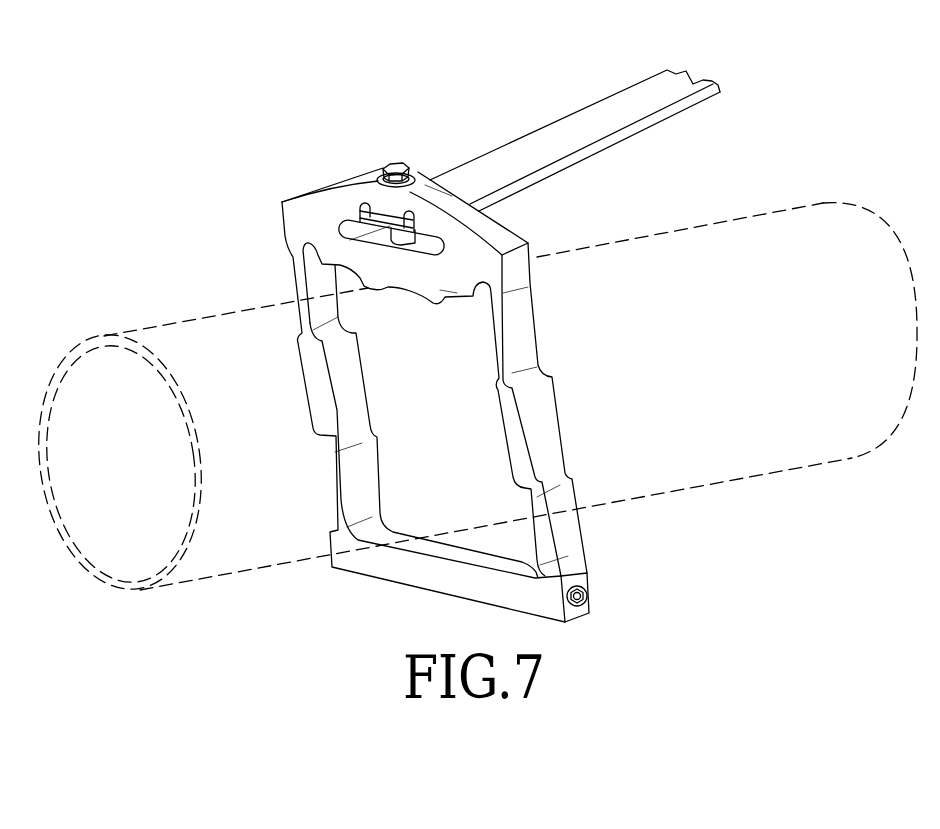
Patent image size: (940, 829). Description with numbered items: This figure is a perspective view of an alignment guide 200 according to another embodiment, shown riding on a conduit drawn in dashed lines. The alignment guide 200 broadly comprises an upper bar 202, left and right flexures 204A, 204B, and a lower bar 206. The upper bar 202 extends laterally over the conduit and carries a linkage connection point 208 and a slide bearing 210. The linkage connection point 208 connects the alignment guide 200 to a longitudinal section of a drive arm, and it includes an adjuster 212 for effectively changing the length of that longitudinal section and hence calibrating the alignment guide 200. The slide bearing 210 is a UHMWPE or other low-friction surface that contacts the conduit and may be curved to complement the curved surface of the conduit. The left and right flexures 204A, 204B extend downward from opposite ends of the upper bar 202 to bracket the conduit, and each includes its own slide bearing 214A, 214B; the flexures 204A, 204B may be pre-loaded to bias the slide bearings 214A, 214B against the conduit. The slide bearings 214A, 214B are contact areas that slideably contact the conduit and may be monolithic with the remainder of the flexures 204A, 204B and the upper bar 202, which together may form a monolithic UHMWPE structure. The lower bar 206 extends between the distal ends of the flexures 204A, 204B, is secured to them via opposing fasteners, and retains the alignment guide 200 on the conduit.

The alignment guide 200 is at (268, 75).
The upper bar 202 is at (306, 176).
The left flexure 204A is at (590, 535).
The right flexure 204B is at (282, 280).
The lower bar 206 is at (402, 600).
The linkage connection point 208 is at (427, 128).
The slide bearing 210 is at (388, 304).
The adjuster 212 is at (386, 145).
The slide bearing 214A is at (488, 424).
The slide bearing 214B is at (360, 385).